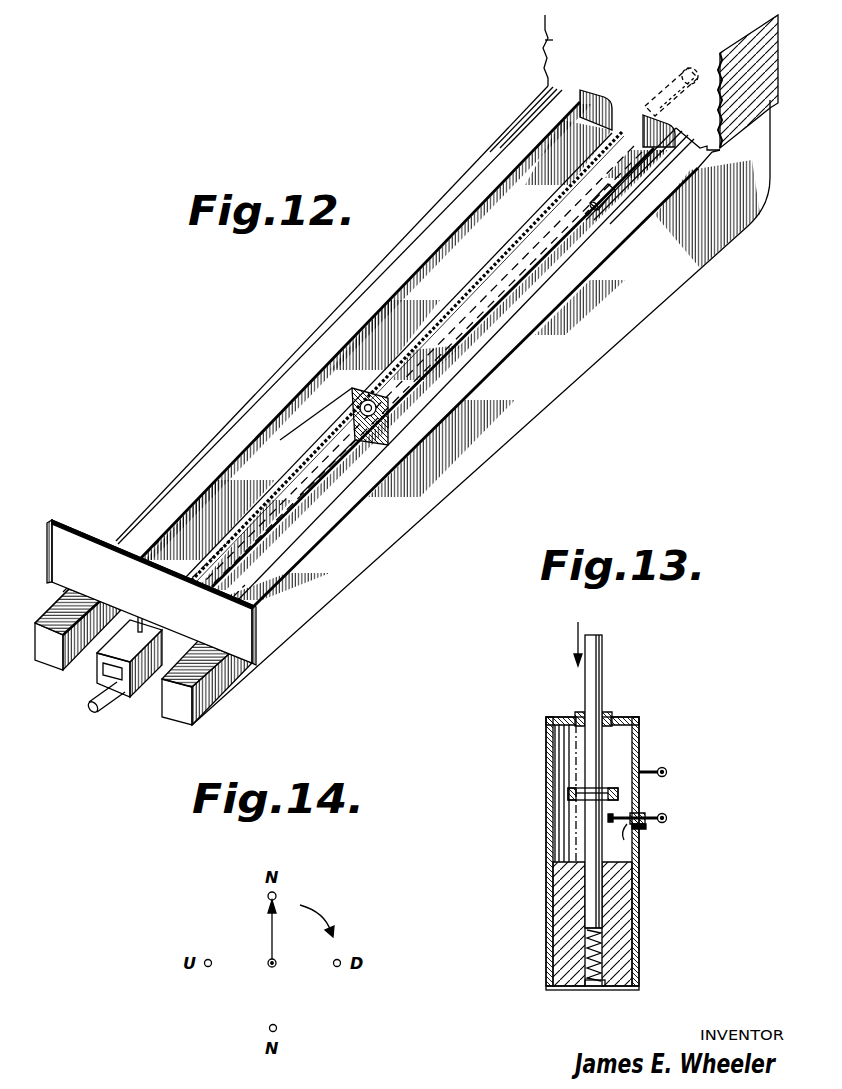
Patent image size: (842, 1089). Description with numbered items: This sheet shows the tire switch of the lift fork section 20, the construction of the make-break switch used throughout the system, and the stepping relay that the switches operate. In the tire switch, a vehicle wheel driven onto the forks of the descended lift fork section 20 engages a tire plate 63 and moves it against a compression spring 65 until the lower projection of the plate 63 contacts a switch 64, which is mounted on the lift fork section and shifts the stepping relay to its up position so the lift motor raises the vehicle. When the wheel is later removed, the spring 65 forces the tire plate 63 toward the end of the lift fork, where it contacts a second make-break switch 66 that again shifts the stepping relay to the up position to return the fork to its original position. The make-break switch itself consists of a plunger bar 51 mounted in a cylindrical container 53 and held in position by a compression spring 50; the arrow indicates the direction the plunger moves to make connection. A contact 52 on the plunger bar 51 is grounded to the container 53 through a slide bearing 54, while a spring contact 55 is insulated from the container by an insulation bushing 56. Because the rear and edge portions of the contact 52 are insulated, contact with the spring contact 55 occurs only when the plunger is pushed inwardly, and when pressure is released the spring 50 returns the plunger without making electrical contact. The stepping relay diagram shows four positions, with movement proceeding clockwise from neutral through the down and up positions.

In FIG. 12, the lift fork section 20 is at (545, 40).
In FIG. 12, the tire plate 63 is at (88, 533).
In FIG. 12, the switch 64 is at (610, 188).
In FIG. 12, the compression spring 65 is at (662, 92).
In FIG. 12, the make-break switch 66 is at (121, 706).
In FIG. 13, the compression spring 50 is at (595, 987).
In FIG. 13, the plunger bar 51 is at (602, 681).
In FIG. 13, the contact 52 is at (578, 798).
In FIG. 13, the container 53 is at (547, 757).
In FIG. 13, the slide bearing 54 is at (578, 714).
In FIG. 13, the spring contact 55 is at (642, 827).
In FIG. 13, the insulation bushing 56 is at (648, 815).